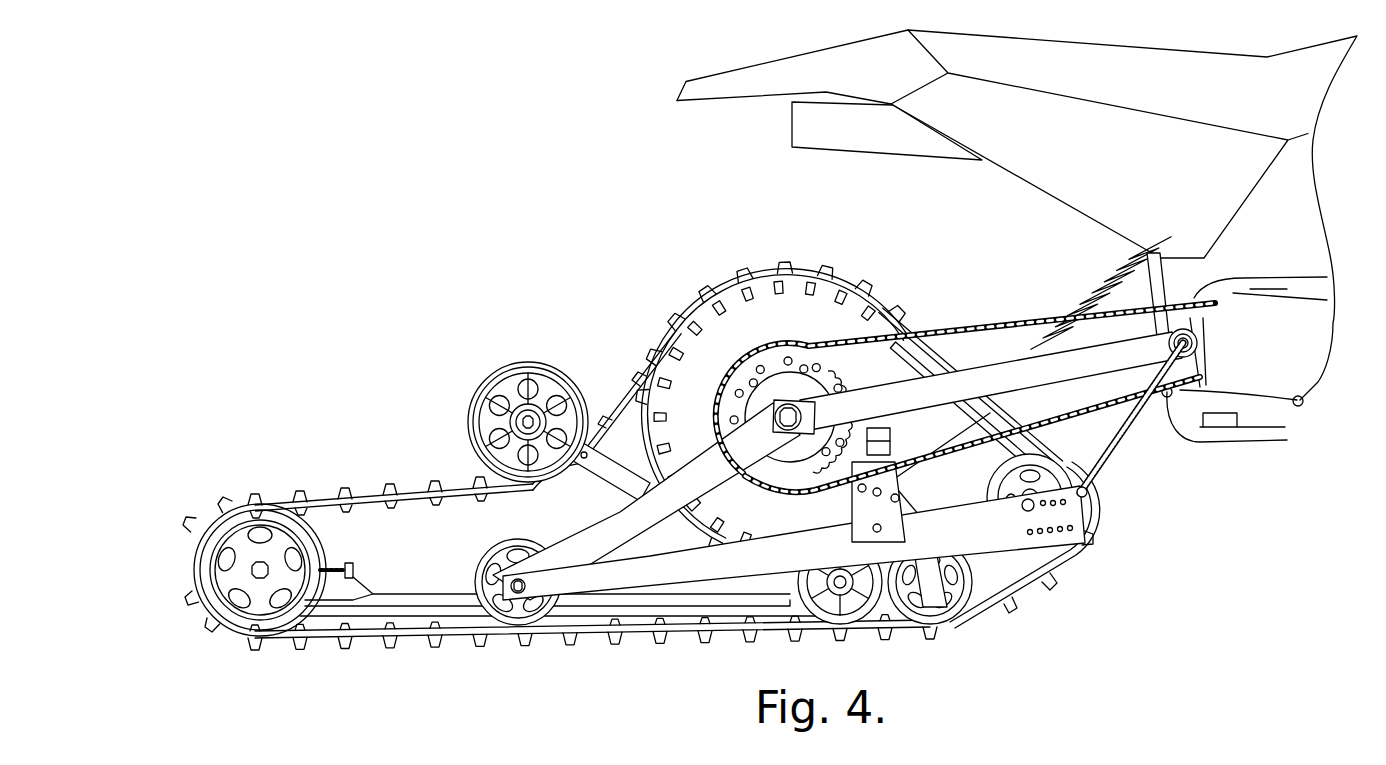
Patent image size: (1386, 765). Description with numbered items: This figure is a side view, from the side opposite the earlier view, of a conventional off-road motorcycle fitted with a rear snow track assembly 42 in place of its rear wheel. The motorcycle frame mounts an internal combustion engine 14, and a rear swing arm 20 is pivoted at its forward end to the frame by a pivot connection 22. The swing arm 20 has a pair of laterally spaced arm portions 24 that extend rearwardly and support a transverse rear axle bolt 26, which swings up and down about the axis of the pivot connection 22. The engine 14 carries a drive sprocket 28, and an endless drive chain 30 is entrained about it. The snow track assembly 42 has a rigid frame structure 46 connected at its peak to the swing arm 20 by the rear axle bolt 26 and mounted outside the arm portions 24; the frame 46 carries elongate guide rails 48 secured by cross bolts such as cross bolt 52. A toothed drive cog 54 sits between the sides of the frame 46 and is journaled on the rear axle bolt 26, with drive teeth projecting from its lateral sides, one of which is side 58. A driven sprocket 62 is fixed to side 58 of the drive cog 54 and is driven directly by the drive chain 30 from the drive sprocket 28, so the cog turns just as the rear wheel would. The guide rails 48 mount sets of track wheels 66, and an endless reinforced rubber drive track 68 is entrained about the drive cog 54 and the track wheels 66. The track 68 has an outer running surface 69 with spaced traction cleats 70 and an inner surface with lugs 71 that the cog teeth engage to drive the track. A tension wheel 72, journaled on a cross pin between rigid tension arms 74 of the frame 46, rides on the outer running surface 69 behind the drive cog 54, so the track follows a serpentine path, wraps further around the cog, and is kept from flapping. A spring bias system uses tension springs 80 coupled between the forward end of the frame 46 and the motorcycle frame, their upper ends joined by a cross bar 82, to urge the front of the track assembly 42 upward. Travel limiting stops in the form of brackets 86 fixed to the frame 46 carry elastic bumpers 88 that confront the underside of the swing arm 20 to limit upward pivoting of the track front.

The internal combustion engine 14 is at (1310, 327).
The rear swing arm 20 is at (1007, 378).
The pivot connection 22 is at (1183, 390).
The arm portions 24 is at (932, 405).
The rear axle bolt 26 is at (800, 393).
The drive sprocket 28 is at (1248, 332).
The drive chain 30 is at (930, 327).
The snow track assembly 42 is at (1093, 512).
The frame structure 46 is at (798, 540).
The guide rails 48 is at (415, 610).
The cross bolt 52 is at (518, 592).
The drive cog 54 is at (764, 399).
The side of drive cog body 58 is at (727, 343).
The driven sprocket 62 is at (737, 405).
The track wheels 66 is at (277, 627).
The drive track 68 is at (176, 570).
The outer running surface 69 is at (360, 497).
The traction cleats 70 is at (253, 503).
The lugs 71 is at (337, 510).
The tension wheel 72 is at (473, 400).
The tension arms 74 is at (532, 420).
The tension springs 80 is at (1107, 463).
The cross bar 82 is at (1188, 350).
The brackets 86 is at (1020, 590).
The bumpers 88 is at (1047, 560).